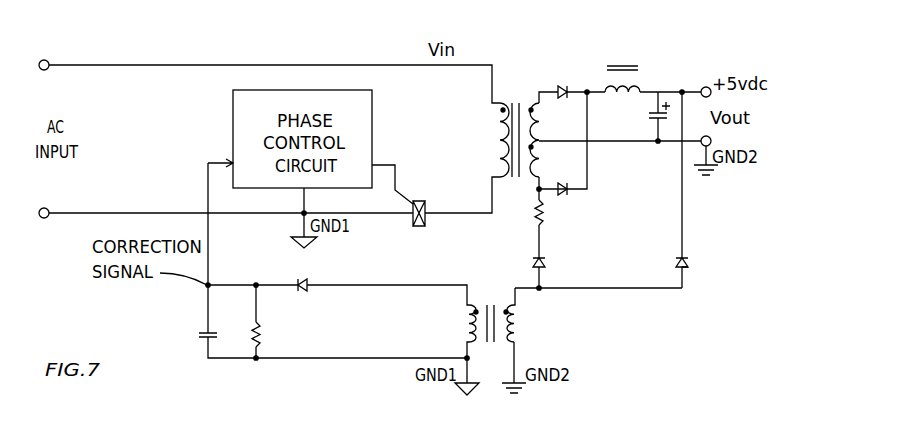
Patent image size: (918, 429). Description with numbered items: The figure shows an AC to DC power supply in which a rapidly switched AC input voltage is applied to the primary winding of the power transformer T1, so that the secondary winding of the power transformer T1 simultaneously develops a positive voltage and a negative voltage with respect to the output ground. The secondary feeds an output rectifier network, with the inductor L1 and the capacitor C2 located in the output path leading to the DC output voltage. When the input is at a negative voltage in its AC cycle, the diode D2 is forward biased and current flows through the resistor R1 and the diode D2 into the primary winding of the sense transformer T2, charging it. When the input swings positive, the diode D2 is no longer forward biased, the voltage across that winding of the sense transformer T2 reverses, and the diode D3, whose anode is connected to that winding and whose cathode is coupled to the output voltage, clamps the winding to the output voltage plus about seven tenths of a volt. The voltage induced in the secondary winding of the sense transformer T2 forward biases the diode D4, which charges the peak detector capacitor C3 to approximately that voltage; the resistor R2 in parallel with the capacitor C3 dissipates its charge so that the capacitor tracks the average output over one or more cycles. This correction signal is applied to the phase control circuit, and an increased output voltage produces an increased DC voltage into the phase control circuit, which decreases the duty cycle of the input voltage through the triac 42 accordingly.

The triac 42 is at (419, 233).
The power transformer T1 is at (517, 128).
The sense transformer T2 is at (488, 310).
The inductor L1 is at (635, 76).
The capacitor C2 is at (650, 116).
The peak detector capacitor C3 is at (217, 323).
The resistor R1 is at (527, 216).
The resistor R2 is at (267, 325).
The diode D2 is at (551, 252).
The diode D3 is at (694, 252).
The diode D4 is at (316, 276).